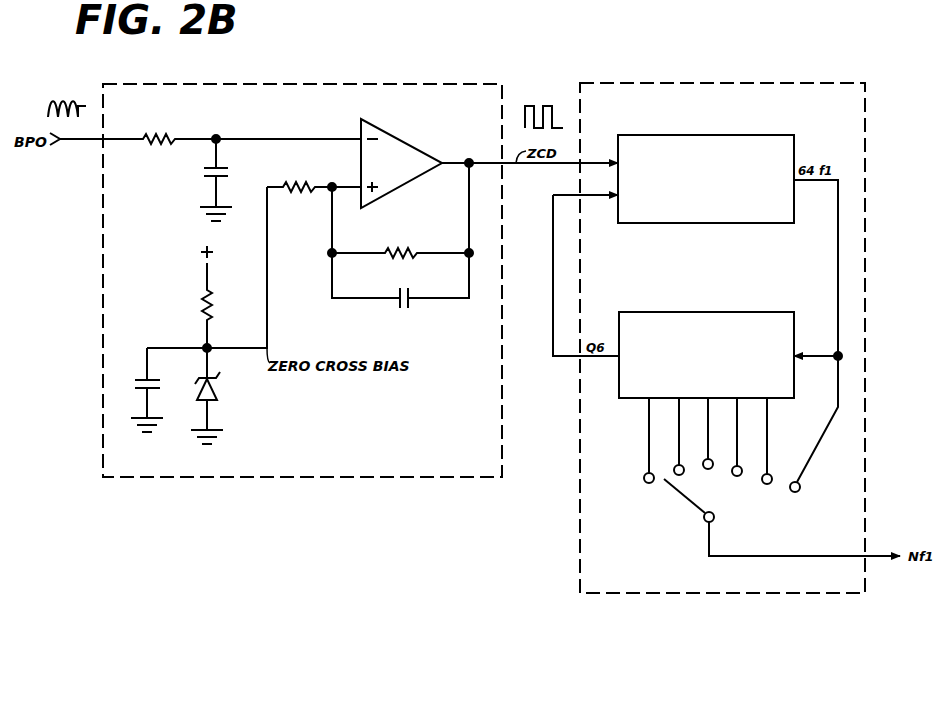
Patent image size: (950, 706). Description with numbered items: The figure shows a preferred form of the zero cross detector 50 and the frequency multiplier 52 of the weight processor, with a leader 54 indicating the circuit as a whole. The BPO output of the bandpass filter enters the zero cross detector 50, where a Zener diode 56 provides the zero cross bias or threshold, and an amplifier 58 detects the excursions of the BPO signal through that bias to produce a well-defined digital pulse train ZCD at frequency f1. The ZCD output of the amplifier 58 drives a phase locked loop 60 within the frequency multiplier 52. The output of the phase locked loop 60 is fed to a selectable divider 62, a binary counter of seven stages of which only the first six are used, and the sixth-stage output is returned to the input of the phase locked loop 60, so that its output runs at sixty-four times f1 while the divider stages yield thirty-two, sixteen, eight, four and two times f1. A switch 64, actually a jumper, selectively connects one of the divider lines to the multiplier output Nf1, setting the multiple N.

The zero cross detector 50 is at (103, 240).
The frequency multiplier 52 is at (866, 210).
The signal path / circuit 54 is at (430, 528).
The Zener diode 56 is at (212, 392).
The amplifier 58 is at (470, 123).
The phase locked loop 60 is at (794, 137).
The selectable divider 62 is at (764, 267).
The switch 64 is at (676, 498).